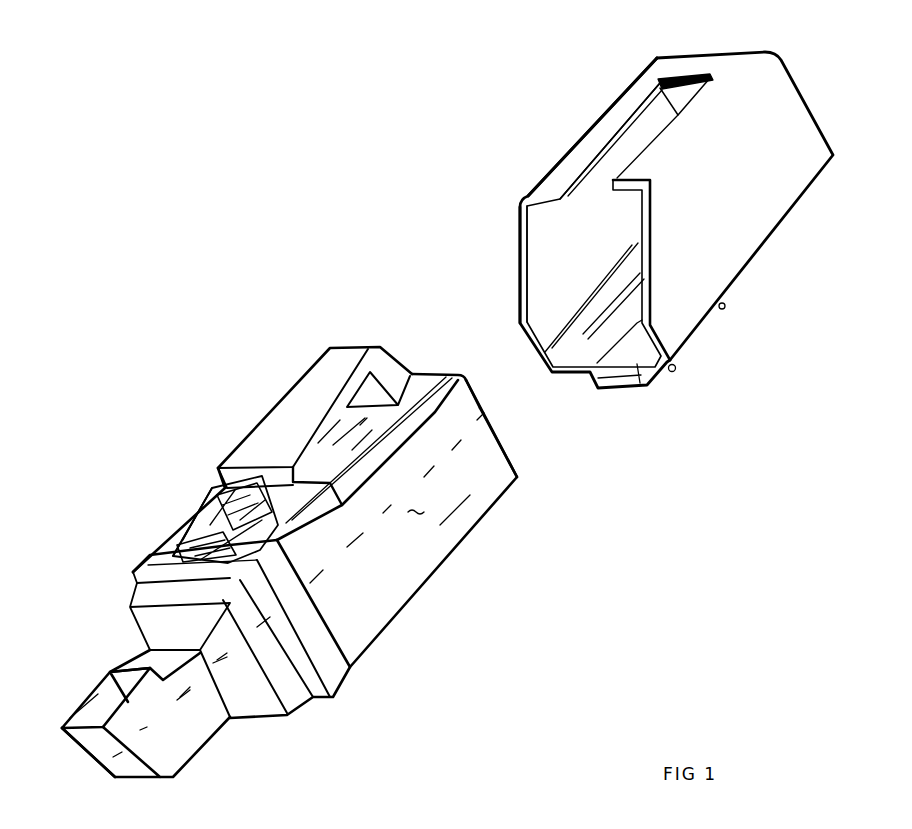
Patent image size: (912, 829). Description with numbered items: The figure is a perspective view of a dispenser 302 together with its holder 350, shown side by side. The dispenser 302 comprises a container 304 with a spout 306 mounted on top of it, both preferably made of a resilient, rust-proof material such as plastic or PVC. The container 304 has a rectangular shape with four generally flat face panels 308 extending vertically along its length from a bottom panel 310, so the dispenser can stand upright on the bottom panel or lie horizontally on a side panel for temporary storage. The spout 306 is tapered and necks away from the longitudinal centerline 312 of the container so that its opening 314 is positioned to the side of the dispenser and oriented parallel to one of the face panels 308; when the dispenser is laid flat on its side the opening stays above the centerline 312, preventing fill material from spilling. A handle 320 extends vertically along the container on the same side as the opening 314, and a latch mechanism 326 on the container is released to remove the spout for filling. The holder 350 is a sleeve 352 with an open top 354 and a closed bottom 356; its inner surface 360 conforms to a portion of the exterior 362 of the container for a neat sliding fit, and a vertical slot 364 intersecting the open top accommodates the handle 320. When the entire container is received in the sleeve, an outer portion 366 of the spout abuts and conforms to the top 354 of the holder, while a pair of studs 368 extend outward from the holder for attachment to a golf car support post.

The dispenser 302 is at (228, 400).
The container 304 is at (413, 567).
The spout 306 is at (192, 742).
The face panels 308 is at (457, 547).
The bottom panel 310 is at (507, 440).
The longitudinal centerline 312 is at (87, 781).
The opening 314 is at (90, 706).
The handle 320 is at (290, 388).
The latch mechanism 326 is at (162, 531).
The holder 350 is at (568, 118).
The sleeve 352 is at (556, 176).
The open top 354 is at (519, 249).
The closed bottom 356 is at (800, 82).
The inner surface 360 is at (553, 283).
The exterior 362 is at (467, 510).
The vertical slot 364 is at (663, 118).
The outer portion 366 is at (340, 641).
The studs 368 is at (726, 311).